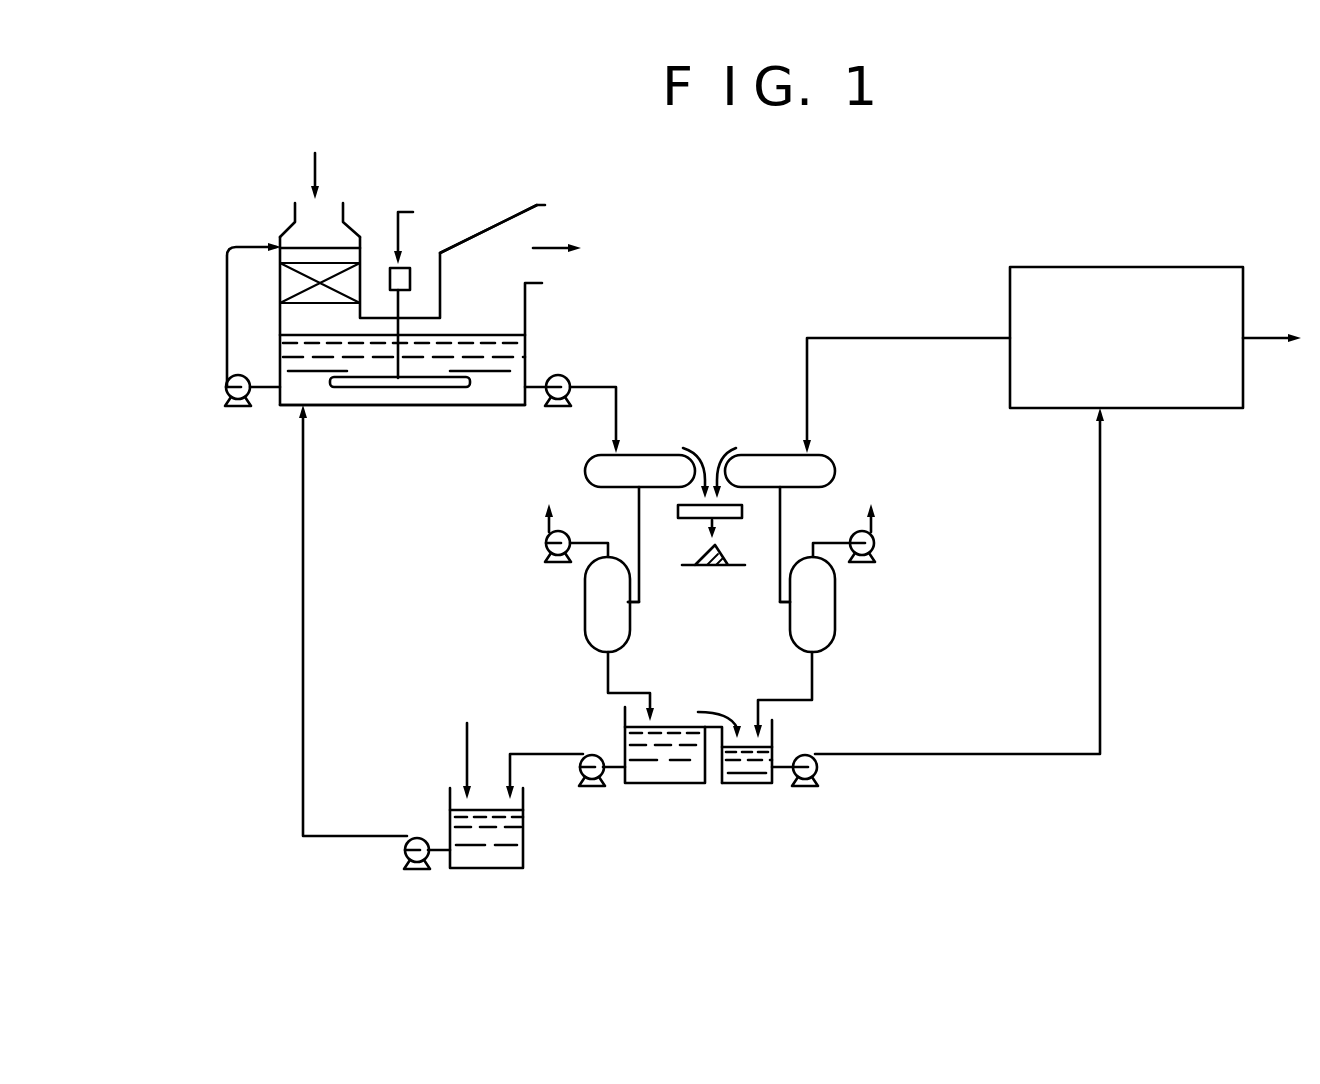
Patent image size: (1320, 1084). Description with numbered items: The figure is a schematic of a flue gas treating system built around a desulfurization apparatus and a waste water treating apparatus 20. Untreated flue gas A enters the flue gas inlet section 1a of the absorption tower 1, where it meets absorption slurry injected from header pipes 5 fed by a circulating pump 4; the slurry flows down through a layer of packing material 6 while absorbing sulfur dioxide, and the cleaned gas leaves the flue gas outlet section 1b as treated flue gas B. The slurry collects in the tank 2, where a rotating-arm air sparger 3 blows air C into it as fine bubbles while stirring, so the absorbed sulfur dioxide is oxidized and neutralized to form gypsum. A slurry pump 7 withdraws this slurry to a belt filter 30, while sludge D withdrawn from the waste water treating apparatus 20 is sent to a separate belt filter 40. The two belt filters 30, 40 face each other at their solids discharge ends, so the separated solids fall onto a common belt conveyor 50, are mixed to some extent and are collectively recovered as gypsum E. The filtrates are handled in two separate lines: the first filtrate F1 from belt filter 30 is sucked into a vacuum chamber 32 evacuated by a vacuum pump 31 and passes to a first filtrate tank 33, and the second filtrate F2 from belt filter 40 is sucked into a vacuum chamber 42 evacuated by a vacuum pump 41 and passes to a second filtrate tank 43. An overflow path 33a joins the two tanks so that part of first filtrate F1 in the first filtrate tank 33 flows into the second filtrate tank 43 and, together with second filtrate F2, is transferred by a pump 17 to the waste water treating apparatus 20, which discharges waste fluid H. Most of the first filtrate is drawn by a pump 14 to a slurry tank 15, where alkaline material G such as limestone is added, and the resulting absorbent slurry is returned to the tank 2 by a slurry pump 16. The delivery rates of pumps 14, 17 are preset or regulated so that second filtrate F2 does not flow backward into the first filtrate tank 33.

The absorption tower 1 is at (278, 325).
The flue gas inlet section 1a is at (283, 223).
The flue gas outlet section 1b is at (507, 212).
The tank 2 is at (342, 408).
The rotating-arm air sparger 3 is at (407, 393).
The circulating pump 4 is at (224, 386).
The header pipes 5 is at (340, 246).
The layer of packing material 6 is at (292, 278).
The slurry pump 7 is at (556, 376).
The pump 14 is at (582, 762).
The slurry tank 15 is at (487, 870).
The slurry pump 16 is at (415, 838).
The pump 17 is at (822, 771).
The waste water treating apparatus 20 is at (1168, 265).
The belt filter 30 is at (657, 455).
The vacuum pump 31 is at (548, 543).
The vacuum chamber 32 is at (585, 630).
The first filtrate tank 33 is at (643, 787).
The overflow path 33a is at (712, 740).
The belt filter 40 is at (760, 455).
The vacuum pump 41 is at (876, 545).
The vacuum chamber 42 is at (837, 627).
The second filtrate tank 43 is at (758, 787).
The belt conveyor 50 is at (690, 520).
The untreated flue gas A is at (331, 166).
The treated flue gas B is at (557, 231).
The air C is at (414, 241).
The sludge D is at (825, 337).
The gypsum E is at (727, 555).
The first filtrate F1 is at (640, 602).
The second filtrate F2 is at (778, 602).
The alkaline material G is at (468, 740).
The waste fluid H is at (1265, 336).